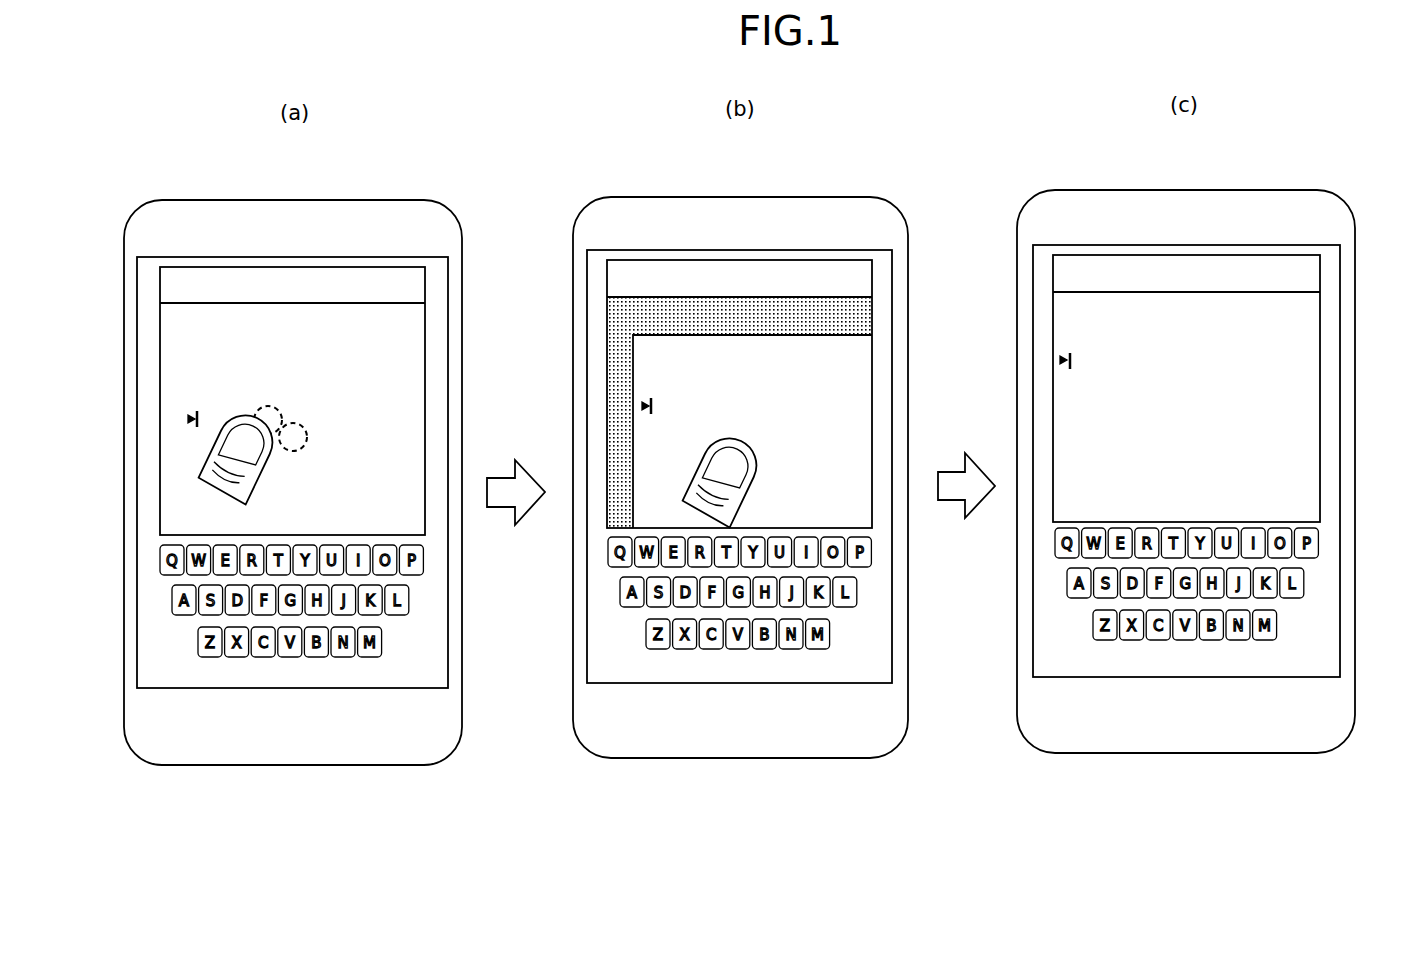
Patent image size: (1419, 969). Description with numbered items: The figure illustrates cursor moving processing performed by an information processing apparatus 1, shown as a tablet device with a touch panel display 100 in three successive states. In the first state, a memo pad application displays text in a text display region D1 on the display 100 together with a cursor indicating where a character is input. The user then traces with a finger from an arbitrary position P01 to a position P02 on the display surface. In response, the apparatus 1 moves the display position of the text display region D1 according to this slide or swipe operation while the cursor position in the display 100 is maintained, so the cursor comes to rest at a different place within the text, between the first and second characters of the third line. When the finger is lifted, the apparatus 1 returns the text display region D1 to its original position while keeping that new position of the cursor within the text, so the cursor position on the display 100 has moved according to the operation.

The information processing apparatus 1 is at (329, 201).
The display 100 is at (448, 280).
The text display region D1 is at (425, 322).
The arbitrary position P01 is at (268, 405).
The position P02 is at (303, 424).